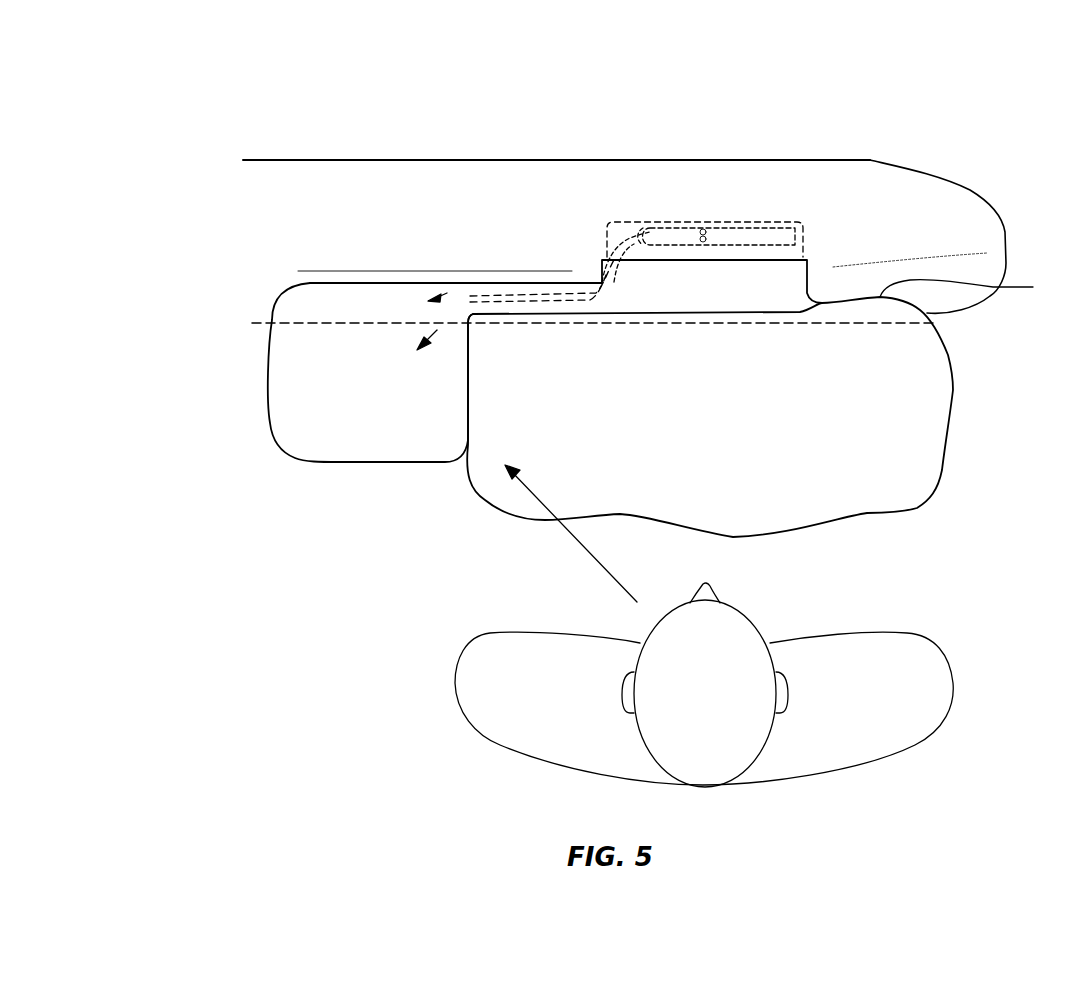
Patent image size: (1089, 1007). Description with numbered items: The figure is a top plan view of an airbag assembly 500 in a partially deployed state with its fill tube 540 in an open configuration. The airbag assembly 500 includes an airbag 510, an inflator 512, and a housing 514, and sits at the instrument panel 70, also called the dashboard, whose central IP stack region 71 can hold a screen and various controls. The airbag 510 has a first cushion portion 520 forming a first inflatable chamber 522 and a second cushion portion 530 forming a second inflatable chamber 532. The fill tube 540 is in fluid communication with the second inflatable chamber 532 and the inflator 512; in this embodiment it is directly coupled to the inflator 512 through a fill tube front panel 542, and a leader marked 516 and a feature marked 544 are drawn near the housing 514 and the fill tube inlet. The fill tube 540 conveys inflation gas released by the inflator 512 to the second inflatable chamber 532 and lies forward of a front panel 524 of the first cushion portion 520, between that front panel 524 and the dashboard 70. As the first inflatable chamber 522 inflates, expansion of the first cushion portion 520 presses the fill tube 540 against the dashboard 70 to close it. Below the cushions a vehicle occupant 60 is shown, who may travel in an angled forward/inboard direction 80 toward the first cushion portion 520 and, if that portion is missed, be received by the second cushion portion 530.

The vehicle occupant 60 is at (884, 702).
The instrument panel 70 is at (580, 200).
The IP stack region 71 is at (362, 246).
The angled forward/inboard direction 80 is at (575, 548).
The airbag assembly 500 is at (731, 183).
The airbag 510 is at (842, 265).
The inflator 512 is at (767, 233).
The housing 514 is at (677, 230).
The housing wall 516 is at (788, 279).
The first cushion portion 520 is at (943, 460).
The first inflatable chamber 522 is at (934, 403).
The front panel 524 is at (522, 350).
The second cushion portion 530 is at (270, 360).
The second inflatable chamber 532 is at (300, 408).
The fill tube 540 is at (484, 276).
The fill tube front panel 542 is at (542, 280).
The duct inlet 544 is at (650, 228).